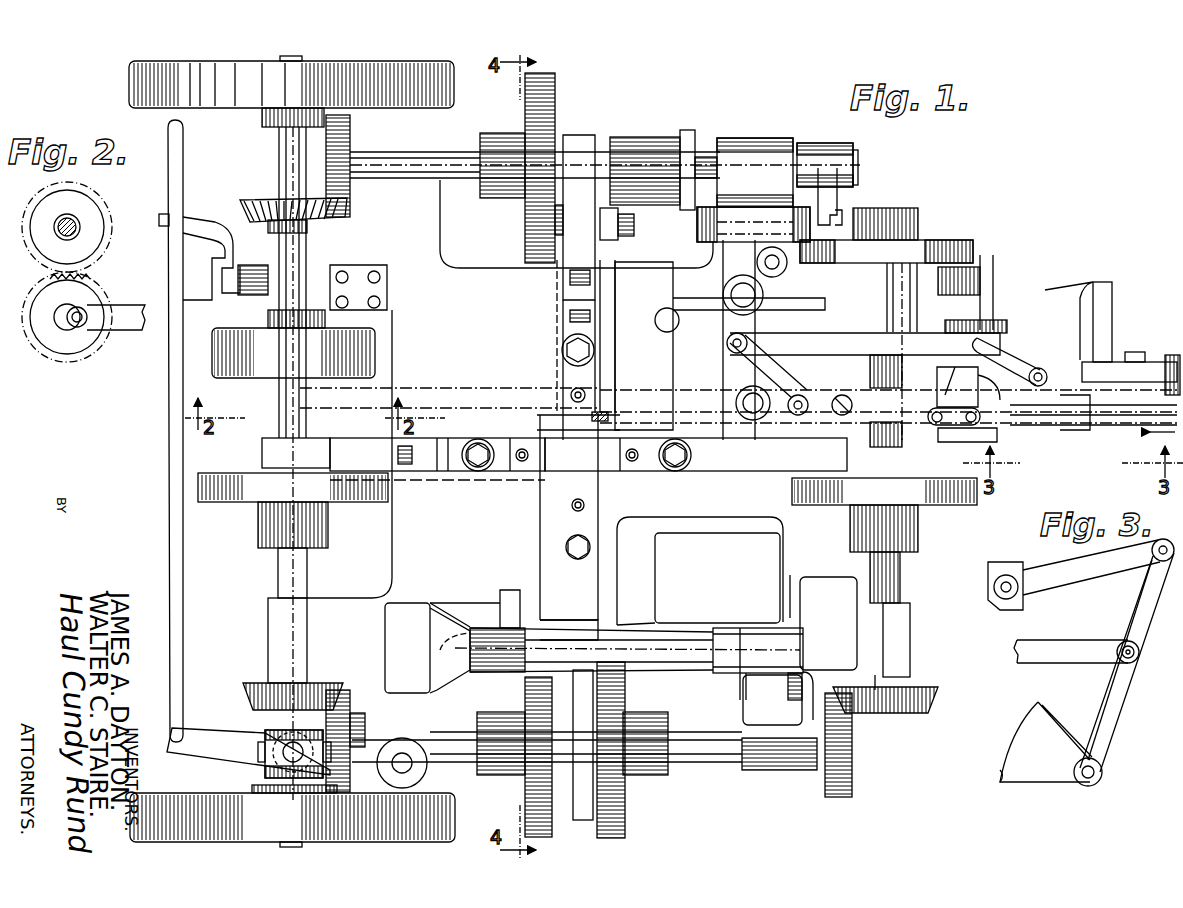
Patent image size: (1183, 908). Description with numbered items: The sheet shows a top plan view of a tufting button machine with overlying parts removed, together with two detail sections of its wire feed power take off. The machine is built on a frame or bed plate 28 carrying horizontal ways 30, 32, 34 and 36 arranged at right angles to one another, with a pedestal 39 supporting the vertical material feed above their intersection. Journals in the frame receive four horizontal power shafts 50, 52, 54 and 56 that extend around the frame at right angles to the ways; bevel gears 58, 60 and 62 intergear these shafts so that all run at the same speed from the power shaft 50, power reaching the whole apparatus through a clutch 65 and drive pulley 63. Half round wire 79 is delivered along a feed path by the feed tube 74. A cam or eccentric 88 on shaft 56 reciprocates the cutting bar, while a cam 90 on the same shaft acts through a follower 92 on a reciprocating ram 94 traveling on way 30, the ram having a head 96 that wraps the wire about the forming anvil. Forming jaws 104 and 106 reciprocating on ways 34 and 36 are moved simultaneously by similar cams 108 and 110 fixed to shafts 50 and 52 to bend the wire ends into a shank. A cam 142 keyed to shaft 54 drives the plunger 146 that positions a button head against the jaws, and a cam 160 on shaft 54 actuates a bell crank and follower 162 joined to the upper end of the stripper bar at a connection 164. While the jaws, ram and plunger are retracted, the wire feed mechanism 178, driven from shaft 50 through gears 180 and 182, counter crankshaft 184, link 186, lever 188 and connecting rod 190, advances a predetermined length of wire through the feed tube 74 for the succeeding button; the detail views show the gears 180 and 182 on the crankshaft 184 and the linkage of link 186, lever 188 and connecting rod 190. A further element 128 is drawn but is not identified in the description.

In FIG. 3, the frame or bed plate 28 is at (1030, 735).
In FIG. 1, the frame or bed plate 28 is at (392, 545).
In FIG. 1, the way 30 is at (570, 316).
In FIG. 1, the way 32 is at (566, 542).
In FIG. 1, the way 34 is at (461, 474).
In FIG. 1, the way 36 is at (712, 474).
In FIG. 1, the pedestal 39 is at (738, 520).
In FIG. 2, the power shaft 50 is at (72, 222).
In FIG. 1, the power shaft 50 is at (280, 565).
In FIG. 1, the power shaft 52 is at (900, 574).
In FIG. 1, the power shaft 54 is at (720, 766).
In FIG. 1, the power shaft 56 is at (454, 154).
In FIG. 1, the bevel gear 58 is at (240, 690).
In FIG. 1, the bevel gear 60 is at (850, 792).
In FIG. 1, the bevel gear 62 is at (245, 206).
In FIG. 1, the drive pulley 63 is at (203, 797).
In FIG. 1, the clutch 65 is at (265, 776).
In FIG. 1, the feed tube 74 is at (691, 429).
In FIG. 1, the half round wire 79 is at (1076, 430).
In FIG. 1, the cam or eccentric 88 is at (638, 138).
In FIG. 1, the cam 90 is at (556, 97).
In FIG. 1, the follower 92 is at (530, 222).
In FIG. 1, the ram 94 is at (570, 333).
In FIG. 1, the head 96 is at (568, 396).
In FIG. 1, the forming jaw 104 is at (518, 437).
In FIG. 1, the forming jaw 106 is at (648, 474).
In FIG. 1, the cam 108 is at (213, 504).
In FIG. 1, the cam 110 is at (936, 508).
In FIG. 1, the spring 128 is at (598, 422).
In FIG. 1, the cam 142 is at (527, 792).
In FIG. 1, the plunger 146 is at (570, 505).
In FIG. 1, the cam 160 is at (626, 802).
In FIG. 1, the bell crank and follower 162 is at (540, 572).
In FIG. 1, the connection to stripper bar 164 is at (538, 432).
In FIG. 1, the wire feed mechanism 178 is at (1000, 420).
In FIG. 2, the gear 180 is at (92, 240).
In FIG. 1, the gear 180 is at (266, 378).
In FIG. 2, the gear 182 is at (92, 300).
In FIG. 2, the counter crankshaft 184 is at (67, 327).
In FIG. 2, the link 186 is at (128, 320).
In FIG. 3, the link 186 is at (1070, 663).
In FIG. 1, the link 186 is at (1095, 425).
In FIG. 3, the lever 188 is at (1118, 715).
In FIG. 1, the lever 188 is at (1143, 370).
In FIG. 3, the connecting rod 190 is at (1082, 566).
In FIG. 1, the connecting rod 190 is at (1090, 410).